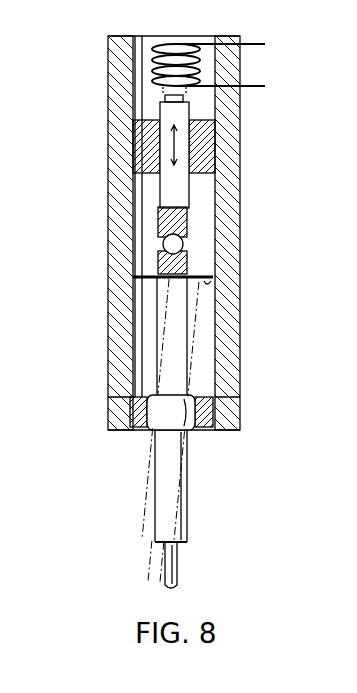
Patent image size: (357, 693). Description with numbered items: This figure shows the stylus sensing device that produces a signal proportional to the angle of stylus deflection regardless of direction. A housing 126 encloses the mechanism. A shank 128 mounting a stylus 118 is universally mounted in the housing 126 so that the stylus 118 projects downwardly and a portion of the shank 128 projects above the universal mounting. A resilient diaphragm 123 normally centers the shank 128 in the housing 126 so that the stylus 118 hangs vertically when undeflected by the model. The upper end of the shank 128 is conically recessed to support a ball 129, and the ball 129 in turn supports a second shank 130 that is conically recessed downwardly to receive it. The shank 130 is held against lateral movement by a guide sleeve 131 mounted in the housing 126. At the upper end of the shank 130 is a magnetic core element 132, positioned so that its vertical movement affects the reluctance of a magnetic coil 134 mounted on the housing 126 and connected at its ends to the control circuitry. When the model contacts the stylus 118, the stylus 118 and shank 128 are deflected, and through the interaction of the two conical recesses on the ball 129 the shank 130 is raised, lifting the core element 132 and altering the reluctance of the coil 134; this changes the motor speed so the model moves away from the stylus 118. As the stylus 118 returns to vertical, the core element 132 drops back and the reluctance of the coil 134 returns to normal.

The stylus 118 is at (177, 560).
The resilient diaphragm 123 is at (140, 298).
The housing 126 is at (240, 271).
The shank 128 is at (157, 470).
The ball 129 is at (163, 244).
The shank 130 is at (189, 186).
The guide sleeve 131 is at (146, 148).
The magnetic core element 132 is at (164, 97).
The magnetic coil 134 is at (192, 75).